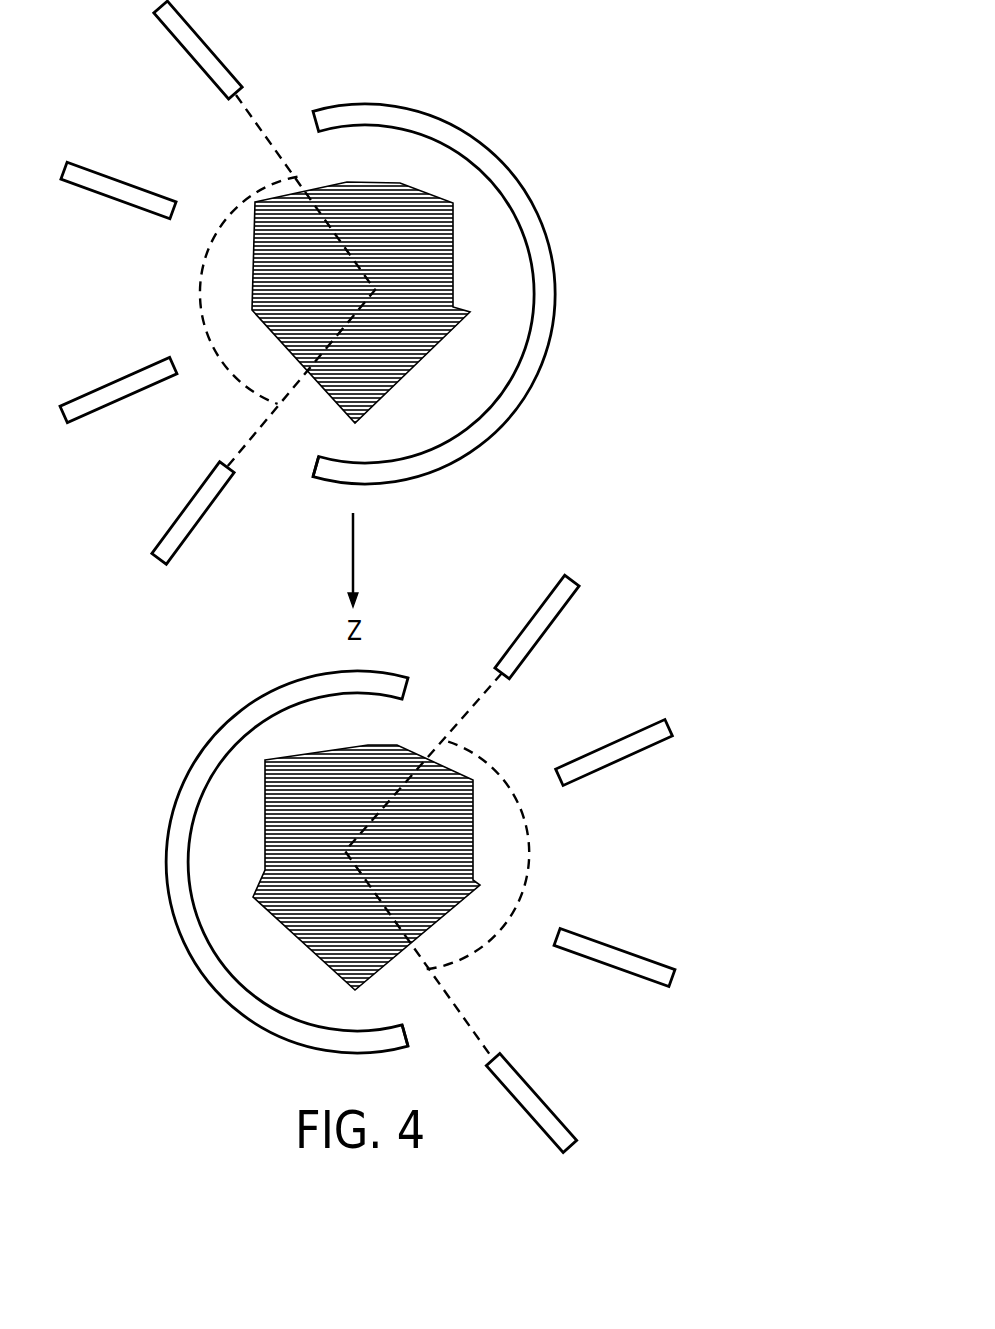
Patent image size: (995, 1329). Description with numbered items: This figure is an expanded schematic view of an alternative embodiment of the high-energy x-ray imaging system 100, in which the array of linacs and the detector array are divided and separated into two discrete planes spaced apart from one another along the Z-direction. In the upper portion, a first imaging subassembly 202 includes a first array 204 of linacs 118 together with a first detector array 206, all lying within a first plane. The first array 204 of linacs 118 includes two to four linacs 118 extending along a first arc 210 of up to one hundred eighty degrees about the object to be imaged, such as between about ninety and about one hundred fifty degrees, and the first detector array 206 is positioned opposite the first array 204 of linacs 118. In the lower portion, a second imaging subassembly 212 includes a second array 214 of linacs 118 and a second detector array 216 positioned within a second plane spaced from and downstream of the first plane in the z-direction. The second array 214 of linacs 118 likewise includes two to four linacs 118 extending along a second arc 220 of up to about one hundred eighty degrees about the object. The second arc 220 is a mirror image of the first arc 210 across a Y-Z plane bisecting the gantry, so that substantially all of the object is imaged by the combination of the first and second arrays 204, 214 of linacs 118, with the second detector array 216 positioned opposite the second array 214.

The imaging system 100 is at (630, 355).
The linacs 118 is at (110, 403).
The first imaging subassembly 202 is at (582, 236).
The first array 204 is at (246, 550).
The first detector array 206 is at (467, 450).
The first arc 210 is at (243, 202).
The second imaging subassembly 212 is at (140, 768).
The second array 214 is at (462, 633).
The second detector array 216 is at (243, 1013).
The second arc 220 is at (482, 750).